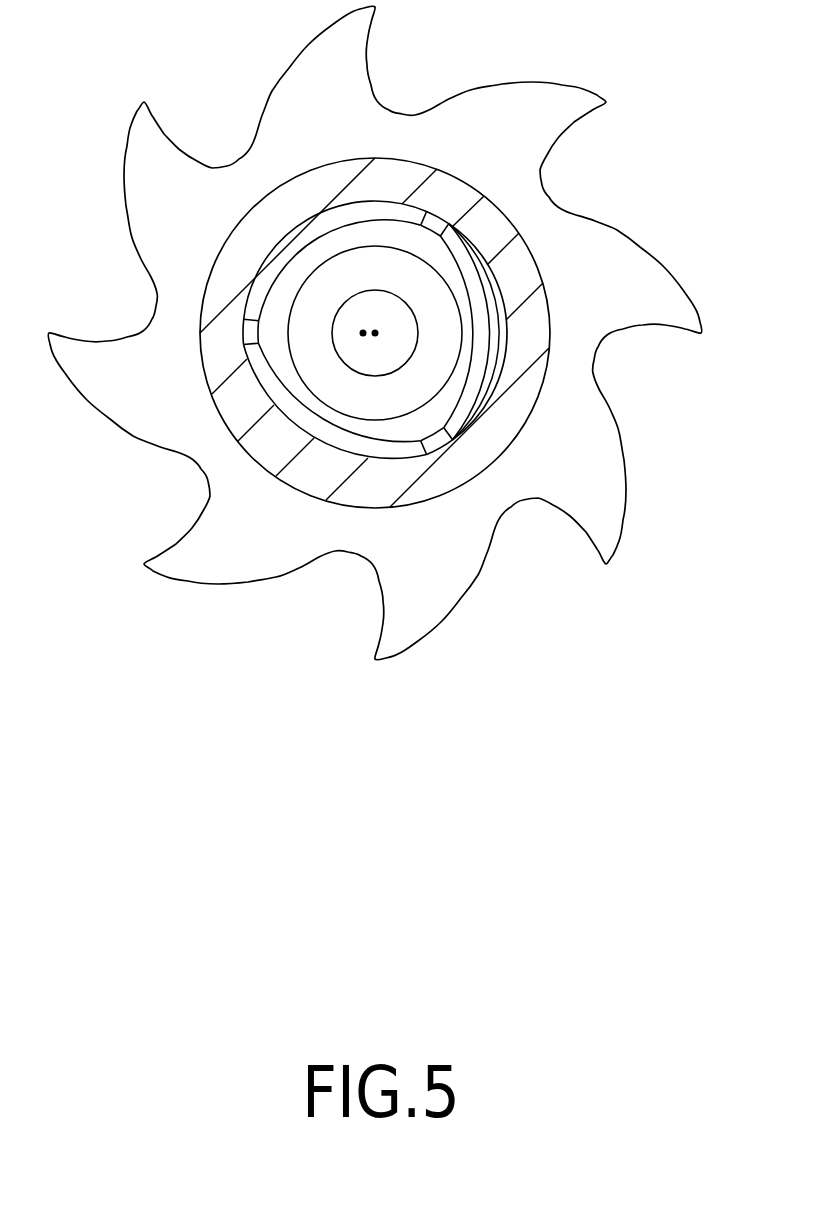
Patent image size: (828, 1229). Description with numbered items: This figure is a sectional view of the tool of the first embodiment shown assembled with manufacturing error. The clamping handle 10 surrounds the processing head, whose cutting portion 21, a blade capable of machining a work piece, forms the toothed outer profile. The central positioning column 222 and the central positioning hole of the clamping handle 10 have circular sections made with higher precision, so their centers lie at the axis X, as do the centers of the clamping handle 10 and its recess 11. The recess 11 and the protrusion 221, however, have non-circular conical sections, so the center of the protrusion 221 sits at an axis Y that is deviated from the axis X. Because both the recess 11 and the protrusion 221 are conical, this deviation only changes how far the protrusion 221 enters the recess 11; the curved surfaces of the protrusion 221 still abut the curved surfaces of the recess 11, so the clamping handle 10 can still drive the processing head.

The clamping handle 10 is at (528, 418).
The recess 11 is at (497, 293).
The cutting portion 21 is at (203, 568).
The protrusion 221 is at (278, 315).
The central positioning column 222 is at (315, 288).
The axis X is at (375, 333).
The axis Y is at (363, 333).